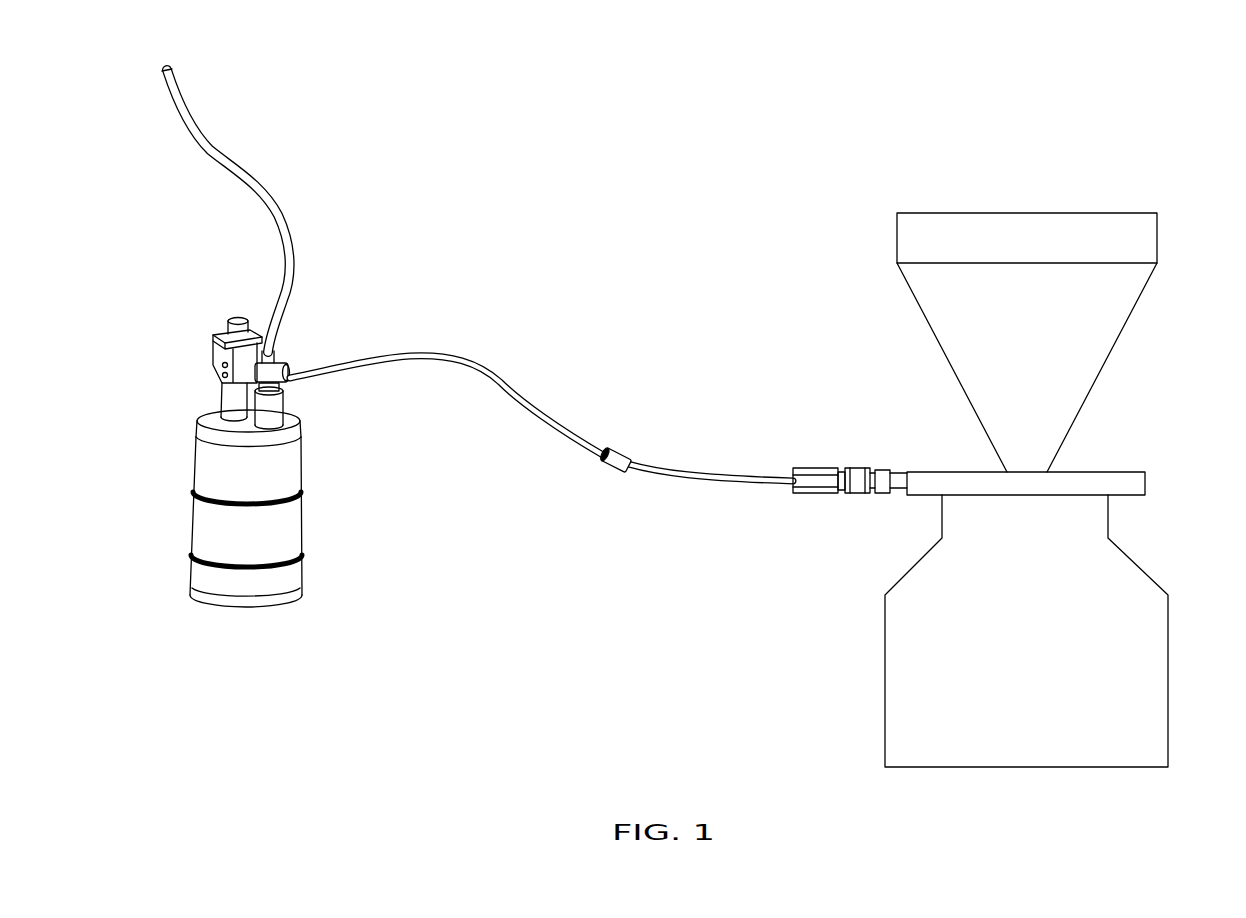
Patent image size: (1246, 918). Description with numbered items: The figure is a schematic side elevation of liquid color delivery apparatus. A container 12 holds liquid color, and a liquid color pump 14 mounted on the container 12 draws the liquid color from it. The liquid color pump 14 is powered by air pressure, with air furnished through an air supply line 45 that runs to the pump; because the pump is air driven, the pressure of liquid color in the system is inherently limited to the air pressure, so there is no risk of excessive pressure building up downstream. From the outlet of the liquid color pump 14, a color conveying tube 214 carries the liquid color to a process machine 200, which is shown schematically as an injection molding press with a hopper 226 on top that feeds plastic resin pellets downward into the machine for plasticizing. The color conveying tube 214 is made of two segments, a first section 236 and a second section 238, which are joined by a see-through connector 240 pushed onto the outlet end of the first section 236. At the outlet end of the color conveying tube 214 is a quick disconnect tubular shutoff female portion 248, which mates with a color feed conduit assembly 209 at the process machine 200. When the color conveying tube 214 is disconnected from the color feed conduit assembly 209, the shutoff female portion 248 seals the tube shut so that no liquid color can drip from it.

The container 12 is at (273, 532).
The liquid color pump 14 is at (286, 344).
The air supply line 45 is at (293, 252).
The color conveying tube 214 is at (541, 409).
The liquid color conveying tube first section 236 is at (415, 353).
The second tube segment 238 is at (655, 461).
The see-through connector 240 is at (605, 451).
The quick disconnect tubular shutoff female portion 248 is at (825, 495).
The color feed conduit assembly 209 is at (862, 464).
The hopper 226 is at (1100, 313).
The process machine 200 is at (912, 690).